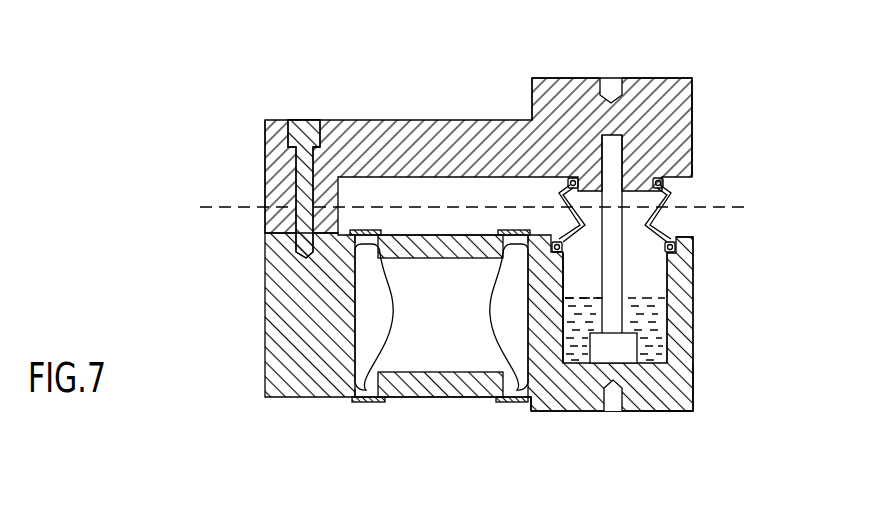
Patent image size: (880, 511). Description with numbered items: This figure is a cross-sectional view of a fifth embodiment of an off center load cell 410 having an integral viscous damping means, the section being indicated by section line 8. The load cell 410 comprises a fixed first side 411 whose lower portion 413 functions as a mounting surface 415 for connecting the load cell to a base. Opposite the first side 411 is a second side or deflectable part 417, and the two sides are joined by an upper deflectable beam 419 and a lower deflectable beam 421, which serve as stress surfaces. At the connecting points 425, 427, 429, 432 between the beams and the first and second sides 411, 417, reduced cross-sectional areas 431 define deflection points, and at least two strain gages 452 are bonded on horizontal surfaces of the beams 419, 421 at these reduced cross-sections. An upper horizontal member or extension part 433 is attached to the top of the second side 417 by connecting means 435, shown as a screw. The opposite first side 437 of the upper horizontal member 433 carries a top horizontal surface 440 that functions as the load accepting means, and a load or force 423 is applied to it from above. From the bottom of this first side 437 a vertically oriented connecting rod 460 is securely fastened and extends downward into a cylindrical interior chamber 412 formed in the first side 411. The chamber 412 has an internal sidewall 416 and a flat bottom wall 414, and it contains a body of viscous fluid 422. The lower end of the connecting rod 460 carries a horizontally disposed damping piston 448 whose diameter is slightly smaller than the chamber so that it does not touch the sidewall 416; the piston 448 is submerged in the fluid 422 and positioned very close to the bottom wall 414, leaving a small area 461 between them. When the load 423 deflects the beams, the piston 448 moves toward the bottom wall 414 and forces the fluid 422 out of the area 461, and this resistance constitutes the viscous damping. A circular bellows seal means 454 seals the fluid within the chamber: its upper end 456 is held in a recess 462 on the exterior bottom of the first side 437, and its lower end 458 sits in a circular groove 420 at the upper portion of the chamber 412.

The section line 8- 8 is at (207, 203).
The off center load cell 410 is at (282, 62).
The first side 411 is at (694, 357).
The cylindrical interior chamber 412 is at (661, 287).
The lower portion 413 is at (690, 400).
The bottom wall 414 is at (575, 364).
The mounting surface 415 is at (670, 411).
The internal sidewall 416 is at (668, 350).
The second side 417 is at (272, 356).
The upper deflectable beam 419 is at (438, 250).
The circular groove 420 is at (557, 250).
The lower deflectable beam 421 is at (453, 376).
The viscous fluid 422 is at (660, 312).
The load or force 423 is at (612, 54).
The connecting point 425 is at (345, 398).
The connecting point 427 is at (538, 410).
The connecting point 429 is at (530, 232).
The reduced cross-sectional areas 431 is at (391, 290).
The connecting point 432 is at (354, 231).
The upper horizontal member 433 is at (433, 122).
The connecting means 435 is at (302, 128).
The first side of upper horizontal member 437 is at (694, 96).
The top horizontal surface 440 is at (660, 79).
The damping piston 448 is at (632, 341).
The strain gages 452 is at (524, 233).
The bellows seal means 454 is at (676, 222).
The upper end of bellows seal 456 is at (666, 185).
The lower end of bellows seal 458 is at (677, 248).
The connecting rod 460 is at (662, 264).
The area between piston and bottom wall 461 is at (618, 363).
The recess 462 is at (568, 180).